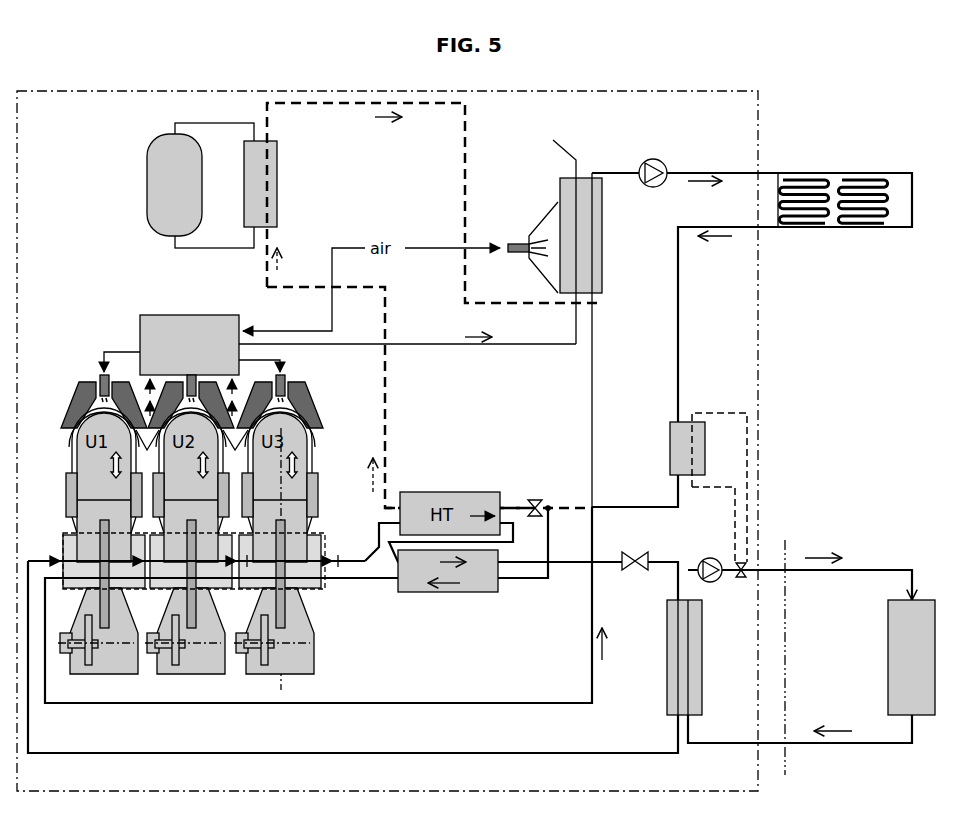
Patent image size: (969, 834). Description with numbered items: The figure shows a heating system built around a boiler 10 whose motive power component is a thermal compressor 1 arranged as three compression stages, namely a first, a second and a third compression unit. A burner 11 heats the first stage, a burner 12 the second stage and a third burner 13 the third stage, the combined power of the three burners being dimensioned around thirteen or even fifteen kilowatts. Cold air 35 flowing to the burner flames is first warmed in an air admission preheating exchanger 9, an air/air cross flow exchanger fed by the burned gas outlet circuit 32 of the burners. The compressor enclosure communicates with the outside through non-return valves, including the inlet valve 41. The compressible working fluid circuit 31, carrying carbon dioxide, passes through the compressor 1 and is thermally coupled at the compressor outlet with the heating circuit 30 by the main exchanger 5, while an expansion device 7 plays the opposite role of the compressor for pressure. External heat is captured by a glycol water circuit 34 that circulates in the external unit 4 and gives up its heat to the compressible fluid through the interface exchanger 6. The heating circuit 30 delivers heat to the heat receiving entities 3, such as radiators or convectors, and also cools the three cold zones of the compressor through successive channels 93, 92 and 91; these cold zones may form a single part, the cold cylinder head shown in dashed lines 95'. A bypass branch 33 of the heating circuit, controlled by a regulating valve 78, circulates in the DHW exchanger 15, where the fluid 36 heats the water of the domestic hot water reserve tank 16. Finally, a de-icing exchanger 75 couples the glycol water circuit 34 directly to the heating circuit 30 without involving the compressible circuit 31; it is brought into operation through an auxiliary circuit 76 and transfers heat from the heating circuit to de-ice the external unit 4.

The thermal compressor 1 is at (98, 304).
The heat receiving entities 3 is at (865, 240).
The external unit 4 is at (925, 596).
The main exchanger 5 is at (448, 598).
The interface exchanger 6 is at (664, 680).
The expansion device 7 is at (638, 575).
The air admission preheating exchanger 9 is at (178, 315).
The boiler 10 is at (254, 88).
The burner 11 is at (76, 396).
The burner 12 is at (197, 402).
The third burner 13 is at (290, 401).
The DHW exchanger 15 is at (279, 161).
The domestic hot water reserve tank 16 is at (147, 176).
The heating circuit 30 is at (680, 352).
The working fluid circuit 31 is at (295, 753).
The burned gas outlet circuit 32 is at (430, 345).
The bypass branch 33 is at (465, 177).
The glycol water circuit 34 is at (860, 745).
The cold air 35 is at (332, 262).
The fluid 36 is at (203, 123).
The inlet valve 41 is at (52, 557).
The de-icing exchanger 75 is at (668, 456).
The auxiliary circuit 76 is at (749, 461).
The regulating valve 78 is at (536, 499).
The channel 91 is at (78, 590).
The channel 92 is at (205, 590).
The channel 93 is at (305, 590).
The cold cylinder head 95' is at (215, 549).